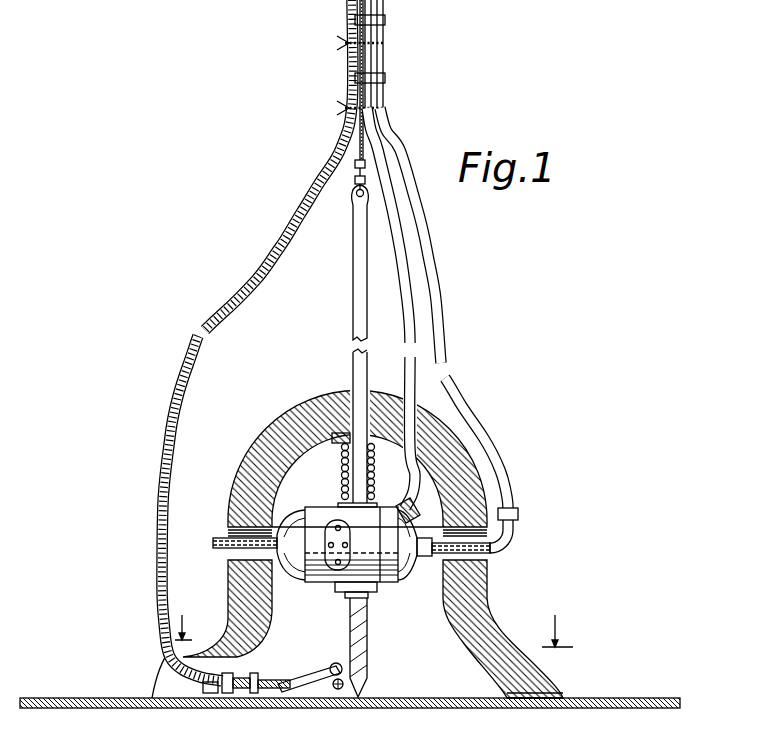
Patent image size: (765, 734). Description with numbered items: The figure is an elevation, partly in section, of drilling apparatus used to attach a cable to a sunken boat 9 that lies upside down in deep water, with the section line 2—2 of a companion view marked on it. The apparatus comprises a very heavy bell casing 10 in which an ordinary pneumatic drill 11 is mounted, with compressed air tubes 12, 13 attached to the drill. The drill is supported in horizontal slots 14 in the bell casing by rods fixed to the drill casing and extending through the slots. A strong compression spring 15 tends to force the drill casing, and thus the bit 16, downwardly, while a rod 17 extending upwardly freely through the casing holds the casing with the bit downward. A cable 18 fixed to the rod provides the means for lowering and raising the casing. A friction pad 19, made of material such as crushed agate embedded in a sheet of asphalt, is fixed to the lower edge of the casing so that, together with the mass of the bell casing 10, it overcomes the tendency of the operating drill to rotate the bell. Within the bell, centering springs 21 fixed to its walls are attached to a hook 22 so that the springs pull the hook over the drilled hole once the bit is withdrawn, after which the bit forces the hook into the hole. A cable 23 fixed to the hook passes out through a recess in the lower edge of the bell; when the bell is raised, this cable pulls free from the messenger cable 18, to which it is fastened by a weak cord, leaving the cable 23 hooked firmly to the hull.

The section line 2— 2 is at (374, 628).
The boat 9 is at (419, 700).
The bell casing 10 is at (485, 618).
The pneumatic drill 11 is at (398, 575).
The compressed air tube 12 is at (483, 435).
The compressed air tube 13 is at (392, 261).
The horizontal slot 14 is at (237, 559).
The compression spring 15 is at (342, 472).
The bit 16 is at (367, 637).
The rod 17 is at (357, 293).
The cable 18 is at (360, 143).
The friction pad 19 is at (560, 692).
The centering spring 21 is at (335, 665).
The hook 22 is at (303, 675).
The cable 23 is at (170, 441).